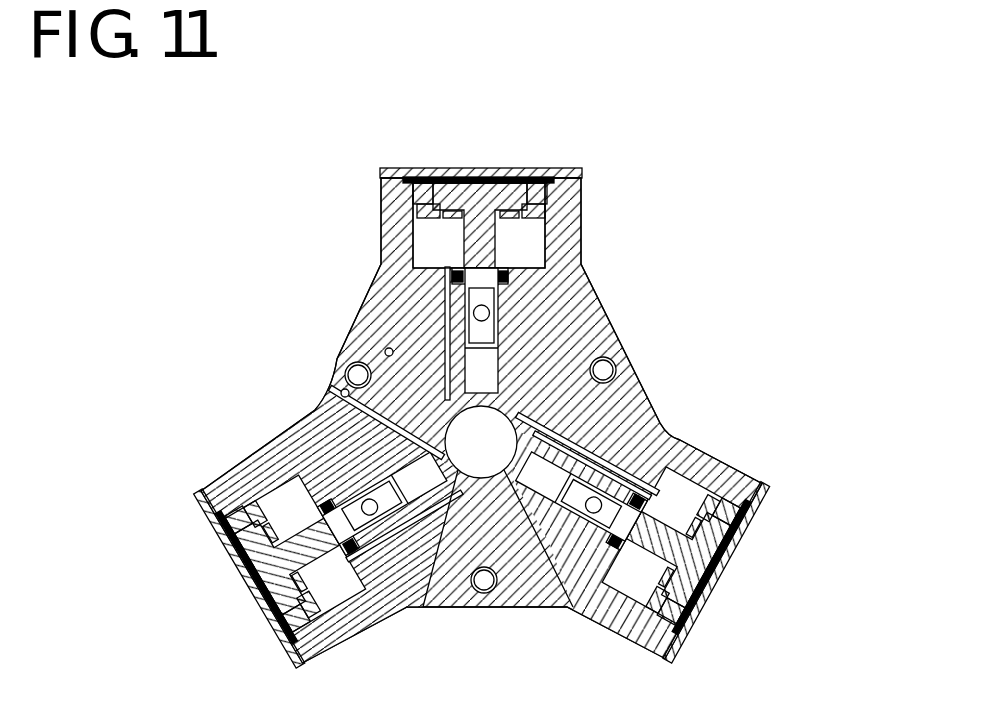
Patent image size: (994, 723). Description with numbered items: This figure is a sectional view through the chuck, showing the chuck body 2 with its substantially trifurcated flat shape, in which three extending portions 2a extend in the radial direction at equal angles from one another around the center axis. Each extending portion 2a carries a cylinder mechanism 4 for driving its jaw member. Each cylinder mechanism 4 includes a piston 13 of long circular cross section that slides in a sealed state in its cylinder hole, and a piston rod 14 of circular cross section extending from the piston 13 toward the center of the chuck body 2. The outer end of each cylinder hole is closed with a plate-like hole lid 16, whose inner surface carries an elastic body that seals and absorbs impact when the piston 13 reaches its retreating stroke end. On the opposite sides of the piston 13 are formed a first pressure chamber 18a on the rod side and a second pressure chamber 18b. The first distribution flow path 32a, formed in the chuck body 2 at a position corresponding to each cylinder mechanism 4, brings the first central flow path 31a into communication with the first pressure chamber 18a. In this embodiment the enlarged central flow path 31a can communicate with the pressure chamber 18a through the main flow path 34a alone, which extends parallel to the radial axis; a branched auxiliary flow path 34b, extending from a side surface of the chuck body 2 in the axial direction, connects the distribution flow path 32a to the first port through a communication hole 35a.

The chuck body 2 is at (603, 332).
The extending portion 2a is at (576, 191).
The cylinder mechanism 4 is at (524, 162).
The piston 13 is at (497, 186).
The piston rod 14 is at (463, 242).
The hole lid 16 is at (410, 178).
The first pressure chamber 18a is at (527, 245).
The second pressure chamber 18b is at (466, 181).
The first central flow path 31a is at (571, 607).
The first distribution flow path 32a is at (257, 270).
The main flow path 34a is at (445, 305).
The auxiliary flow path 34b is at (343, 383).
The communication hole 35a is at (328, 395).